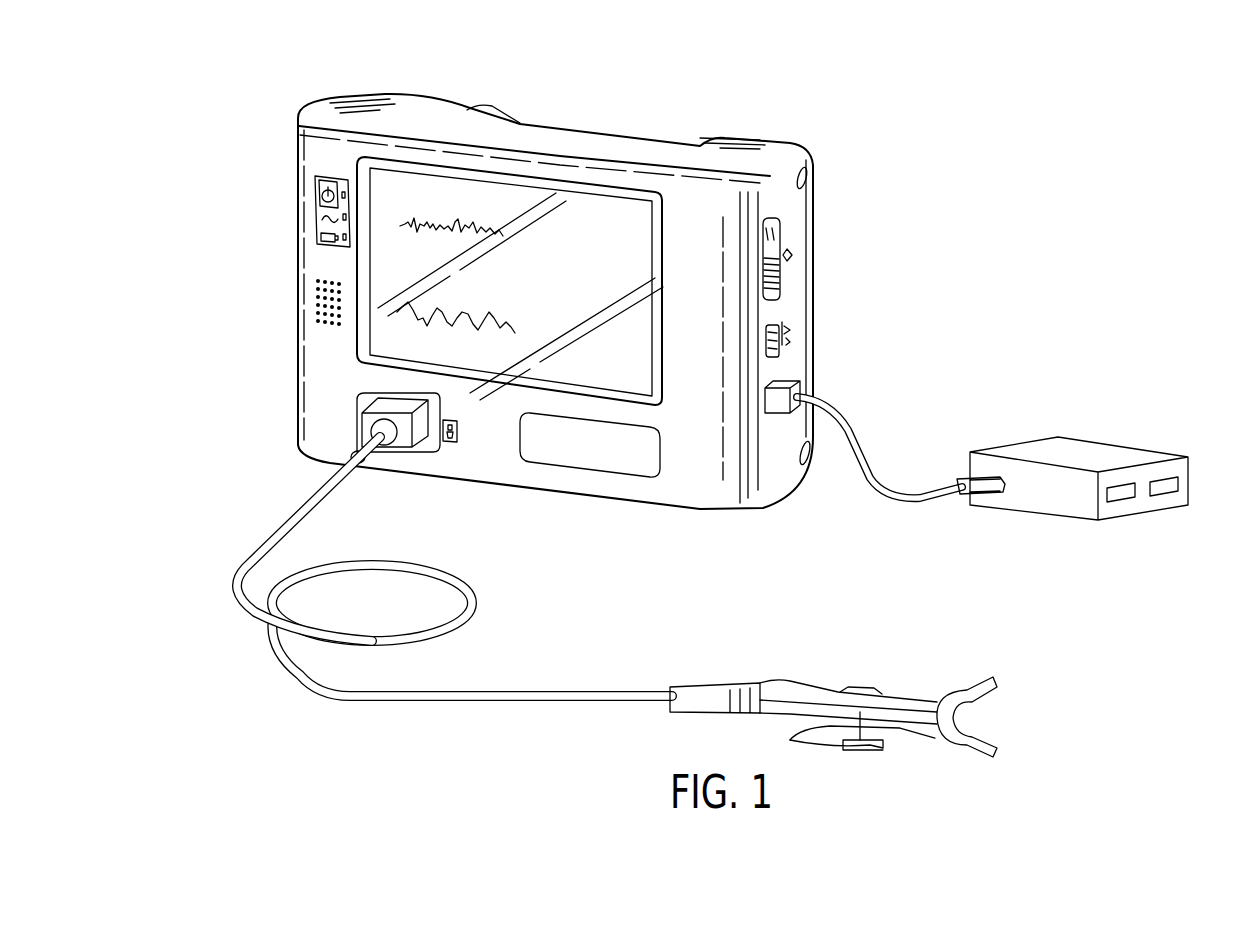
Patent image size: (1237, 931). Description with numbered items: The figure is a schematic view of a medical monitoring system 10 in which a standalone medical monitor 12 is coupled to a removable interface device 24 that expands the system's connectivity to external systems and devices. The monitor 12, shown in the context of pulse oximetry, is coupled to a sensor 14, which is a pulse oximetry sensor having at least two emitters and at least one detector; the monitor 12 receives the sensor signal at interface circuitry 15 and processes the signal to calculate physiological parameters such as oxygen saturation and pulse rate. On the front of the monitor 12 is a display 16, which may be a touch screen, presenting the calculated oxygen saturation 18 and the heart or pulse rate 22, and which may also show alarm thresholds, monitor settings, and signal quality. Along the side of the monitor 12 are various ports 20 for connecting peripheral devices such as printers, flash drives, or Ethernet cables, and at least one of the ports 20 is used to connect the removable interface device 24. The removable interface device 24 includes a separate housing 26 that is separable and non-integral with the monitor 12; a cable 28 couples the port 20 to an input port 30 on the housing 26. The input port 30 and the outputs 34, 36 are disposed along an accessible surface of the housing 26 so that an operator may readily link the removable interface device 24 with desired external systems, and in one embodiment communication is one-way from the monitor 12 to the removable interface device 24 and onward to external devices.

The medical monitoring system 10 is at (745, 93).
The medical monitor 12 is at (588, 289).
The sensor 14 is at (587, 671).
The interface circuitry 15 is at (372, 405).
The display 16 is at (512, 182).
The oxygen saturation 18 is at (572, 206).
The ports 20 is at (838, 209).
The pulse rate 22 is at (627, 366).
The removable interface device 24 is at (831, 447).
The housing 26 is at (1122, 447).
The cable 28 is at (867, 468).
The input port 30 is at (992, 489).
The output 34 is at (1165, 496).
The output 36 is at (1122, 499).